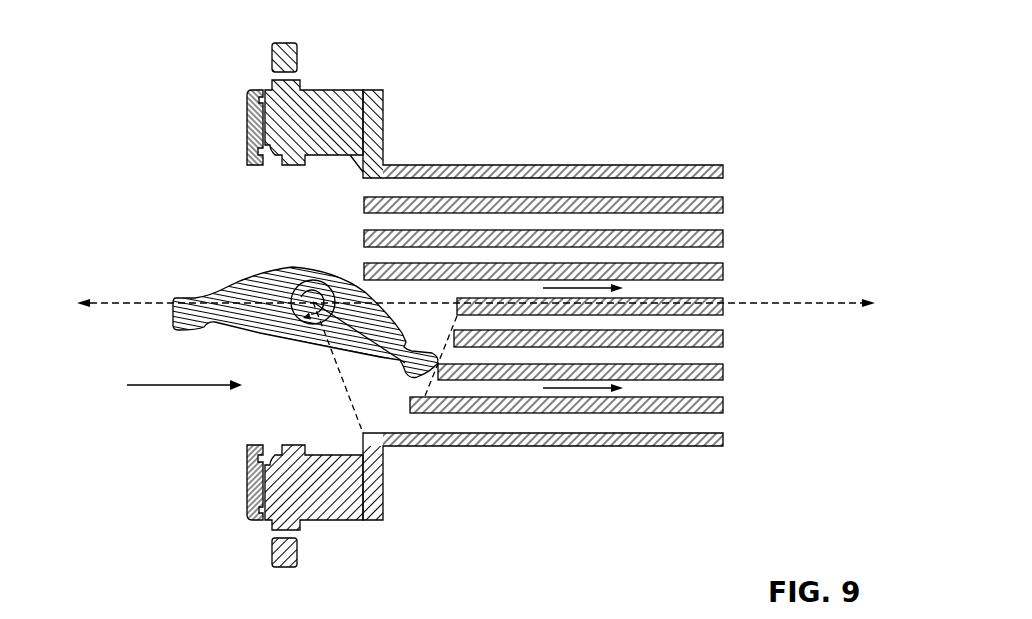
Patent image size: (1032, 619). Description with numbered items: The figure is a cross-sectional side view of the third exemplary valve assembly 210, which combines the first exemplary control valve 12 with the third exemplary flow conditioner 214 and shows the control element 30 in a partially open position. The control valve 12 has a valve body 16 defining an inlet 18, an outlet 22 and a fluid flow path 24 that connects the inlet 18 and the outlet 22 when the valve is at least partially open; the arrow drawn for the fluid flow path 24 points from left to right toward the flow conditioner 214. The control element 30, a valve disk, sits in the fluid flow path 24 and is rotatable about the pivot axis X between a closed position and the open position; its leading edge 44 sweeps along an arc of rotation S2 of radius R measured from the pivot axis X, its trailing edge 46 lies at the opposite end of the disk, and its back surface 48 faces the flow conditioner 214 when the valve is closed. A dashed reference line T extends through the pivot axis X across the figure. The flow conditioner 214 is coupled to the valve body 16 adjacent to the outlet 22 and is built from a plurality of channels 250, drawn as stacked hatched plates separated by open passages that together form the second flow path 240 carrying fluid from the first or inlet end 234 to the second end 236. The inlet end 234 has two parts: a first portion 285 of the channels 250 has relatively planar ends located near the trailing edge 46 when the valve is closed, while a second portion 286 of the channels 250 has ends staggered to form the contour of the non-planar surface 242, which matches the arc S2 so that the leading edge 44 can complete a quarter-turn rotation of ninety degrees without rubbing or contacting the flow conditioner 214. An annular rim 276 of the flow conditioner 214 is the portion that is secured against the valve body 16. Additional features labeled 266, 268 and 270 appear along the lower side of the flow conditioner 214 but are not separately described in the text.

The third exemplary valve assembly 210 is at (108, 54).
The control valve 12 is at (213, 136).
The inlet 18 is at (263, 185).
The valve body 16 is at (327, 110).
The outlet 22 is at (350, 152).
The annular rim 276 is at (373, 107).
The third exemplary flow conditioner 214 is at (493, 167).
The plurality of channels 250 is at (423, 190).
The first portion of the plurality of channels 285 is at (366, 190).
The first or inlet end 234 is at (363, 203).
The second end 236 is at (723, 203).
The lower plate 266 is at (657, 443).
The plate trailing edge 270 is at (723, 440).
The lower housing body 268 is at (362, 480).
The control element 30 is at (232, 282).
The back surface 48 is at (240, 290).
The trailing edge 46 is at (172, 305).
The fluid flow path 24 is at (168, 386).
The second flow path 240 is at (583, 392).
The non-planar surface 242 is at (445, 337).
The leading edge 44 is at (445, 337).
The second portion of the plurality of channels 286 is at (410, 410).
The pivot axis X is at (313, 302).
The radius R is at (335, 345).
The section axis T is at (476, 307).
The arc of rotation S2 is at (399, 418).